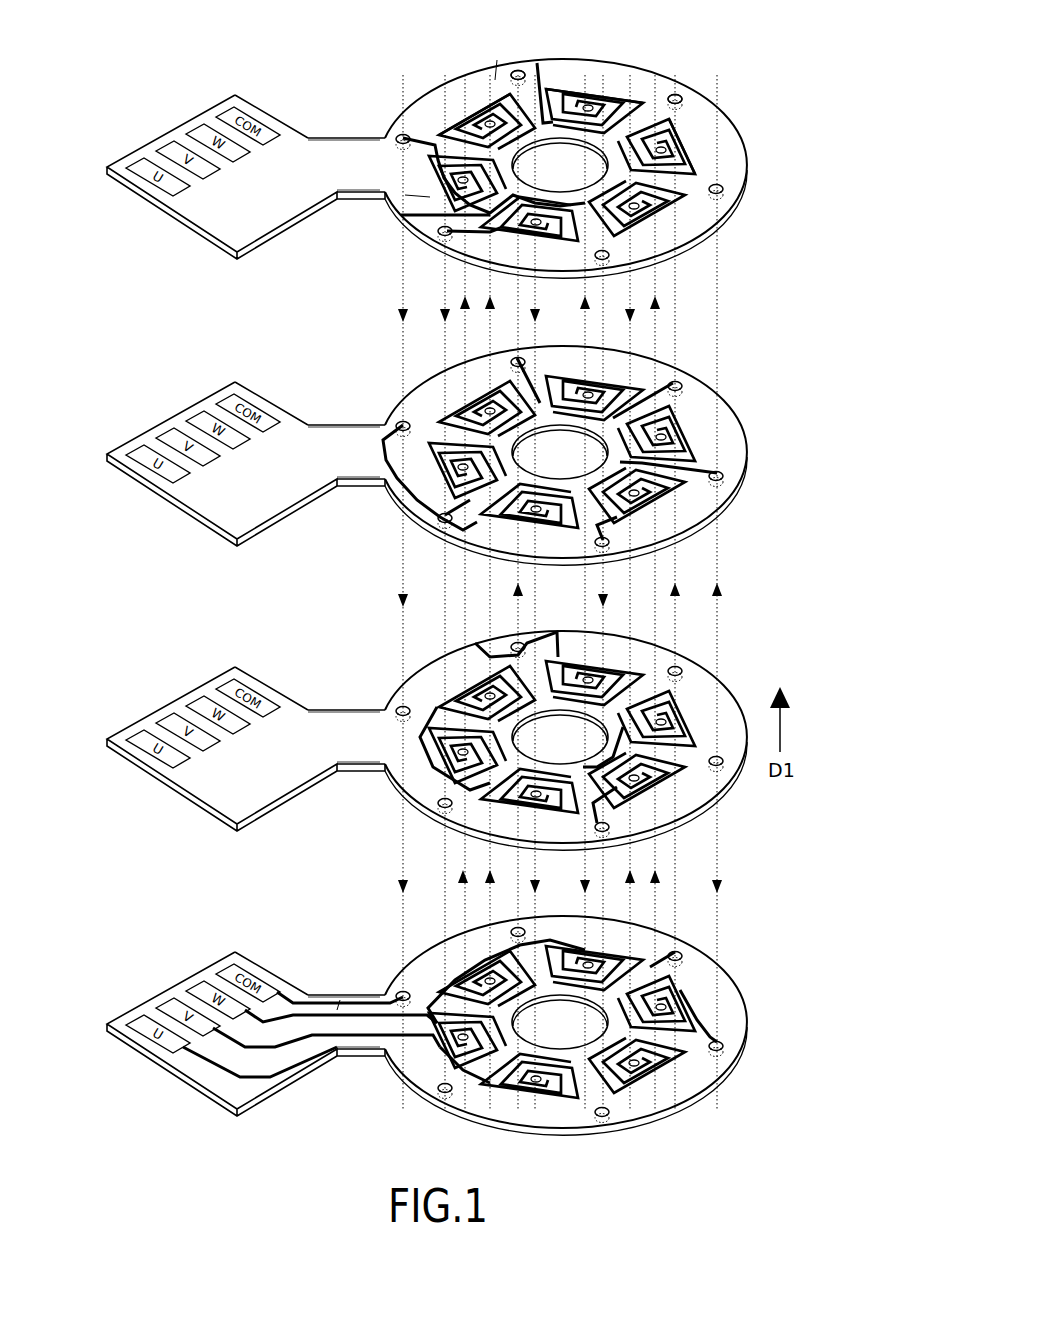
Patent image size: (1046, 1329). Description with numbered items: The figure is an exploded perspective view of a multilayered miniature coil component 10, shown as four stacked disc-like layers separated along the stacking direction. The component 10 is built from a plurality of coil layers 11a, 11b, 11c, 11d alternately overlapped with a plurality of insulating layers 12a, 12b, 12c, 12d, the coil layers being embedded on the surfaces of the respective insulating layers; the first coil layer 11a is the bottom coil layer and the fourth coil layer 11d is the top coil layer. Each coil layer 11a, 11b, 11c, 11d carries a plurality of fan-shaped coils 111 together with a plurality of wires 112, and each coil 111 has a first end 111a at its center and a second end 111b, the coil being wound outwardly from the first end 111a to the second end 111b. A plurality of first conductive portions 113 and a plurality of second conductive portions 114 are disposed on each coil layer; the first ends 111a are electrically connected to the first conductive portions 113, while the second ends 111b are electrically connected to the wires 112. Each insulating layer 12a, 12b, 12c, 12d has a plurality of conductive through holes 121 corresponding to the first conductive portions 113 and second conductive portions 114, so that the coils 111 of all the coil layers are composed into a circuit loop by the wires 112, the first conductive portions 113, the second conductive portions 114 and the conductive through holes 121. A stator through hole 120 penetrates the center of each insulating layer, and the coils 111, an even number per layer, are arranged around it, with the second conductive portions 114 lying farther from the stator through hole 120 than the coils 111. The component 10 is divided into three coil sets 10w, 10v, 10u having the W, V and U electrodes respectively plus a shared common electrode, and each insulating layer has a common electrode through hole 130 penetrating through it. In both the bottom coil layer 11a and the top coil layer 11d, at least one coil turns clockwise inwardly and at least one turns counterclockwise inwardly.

The multilayered miniature coil component 10 is at (585, 558).
The first coil layer 11a is at (400, 1006).
The second coil layer 11b is at (427, 724).
The third coil layer 11c is at (427, 440).
The fourth coil layer 11d is at (447, 146).
The insulating layer 12a is at (303, 1000).
The insulating layer 12b is at (340, 725).
The insulating layer 12c is at (340, 440).
The insulating layer 12d is at (339, 152).
The coil set 10u is at (114, 992).
The coil set 10v is at (142, 977).
The coil set 10w is at (172, 960).
The coil 111 is at (550, 100).
The first end 111a is at (472, 110).
The second end 111b is at (433, 231).
The wire 112 is at (337, 1000).
The first conductive portion 113 is at (493, 100).
The second conductive portion 114 is at (510, 72).
The stator through hole 120 is at (660, 175).
The conductive through hole 121 is at (690, 103).
The common electrode through hole 130 is at (398, 993).